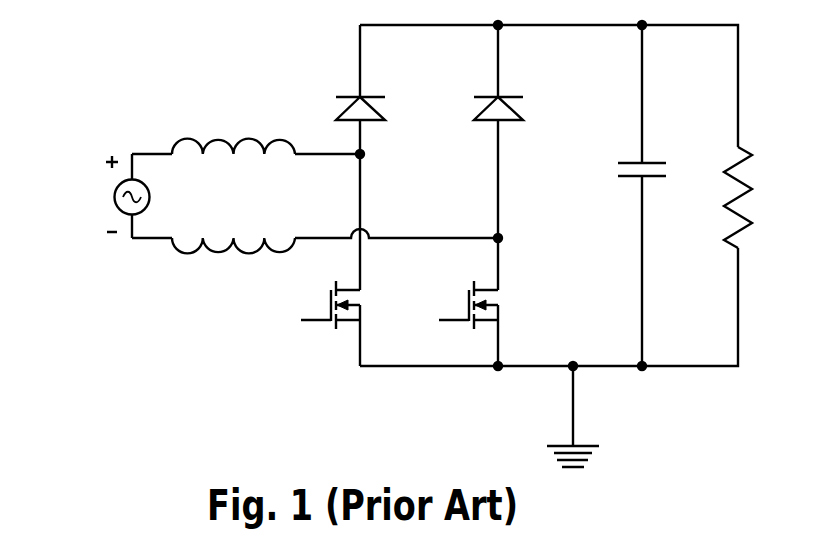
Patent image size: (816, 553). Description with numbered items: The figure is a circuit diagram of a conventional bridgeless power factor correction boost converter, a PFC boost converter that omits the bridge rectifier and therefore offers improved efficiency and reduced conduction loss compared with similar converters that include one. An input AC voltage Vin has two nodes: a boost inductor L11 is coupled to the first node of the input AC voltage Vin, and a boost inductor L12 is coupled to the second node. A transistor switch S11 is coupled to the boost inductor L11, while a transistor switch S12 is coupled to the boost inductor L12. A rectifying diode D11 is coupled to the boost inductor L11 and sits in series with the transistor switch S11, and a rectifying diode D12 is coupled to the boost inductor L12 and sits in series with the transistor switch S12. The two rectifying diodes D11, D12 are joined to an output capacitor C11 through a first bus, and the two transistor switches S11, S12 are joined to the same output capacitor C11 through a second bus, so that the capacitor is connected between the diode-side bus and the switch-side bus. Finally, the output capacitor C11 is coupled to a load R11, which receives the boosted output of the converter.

The input AC voltage Vin is at (105, 194).
The boost inductor L11 is at (233, 131).
The boost inductor L12 is at (233, 262).
The rectifying diode D11 is at (388, 157).
The rectifying diode D12 is at (526, 157).
The transistor switch S11 is at (352, 323).
The transistor switch S12 is at (491, 323).
The output capacitor C11 is at (620, 195).
The load R11 is at (763, 197).